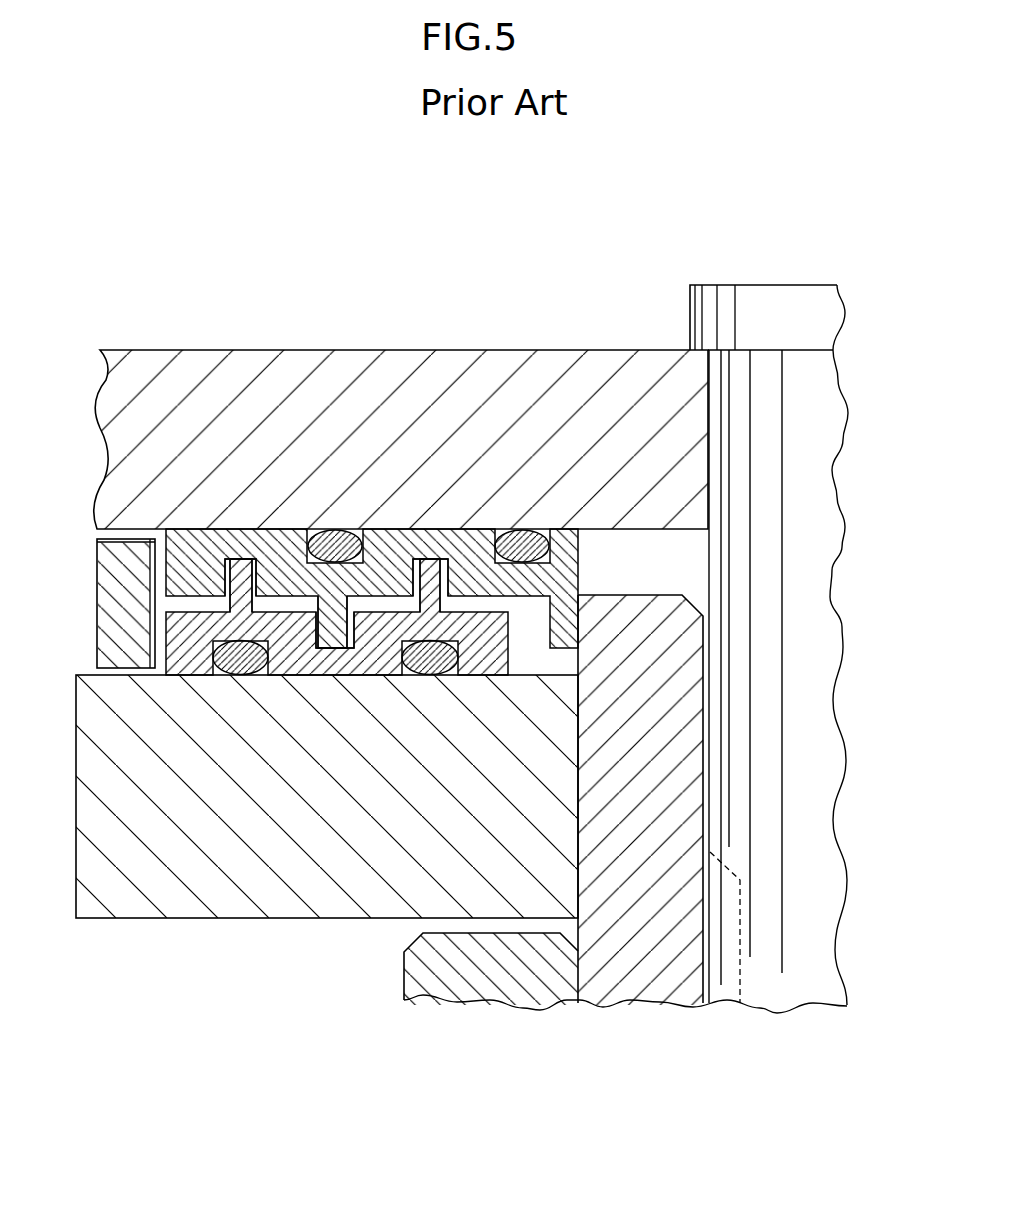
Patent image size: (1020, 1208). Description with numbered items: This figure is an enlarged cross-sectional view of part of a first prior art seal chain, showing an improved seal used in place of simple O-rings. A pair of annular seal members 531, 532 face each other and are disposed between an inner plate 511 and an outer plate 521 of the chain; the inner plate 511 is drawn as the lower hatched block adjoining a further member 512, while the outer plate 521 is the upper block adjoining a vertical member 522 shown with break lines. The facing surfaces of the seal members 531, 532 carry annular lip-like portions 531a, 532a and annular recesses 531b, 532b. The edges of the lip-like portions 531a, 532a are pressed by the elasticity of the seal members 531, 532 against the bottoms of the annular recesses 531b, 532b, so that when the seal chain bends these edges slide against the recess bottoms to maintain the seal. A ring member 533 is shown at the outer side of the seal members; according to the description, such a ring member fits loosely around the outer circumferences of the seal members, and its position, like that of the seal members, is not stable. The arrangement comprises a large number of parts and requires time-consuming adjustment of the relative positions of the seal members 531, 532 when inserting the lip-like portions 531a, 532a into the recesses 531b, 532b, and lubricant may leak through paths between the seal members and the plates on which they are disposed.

The inner plate 511 is at (122, 913).
The second housing member 512 is at (636, 1000).
The outer plate 521 is at (550, 350).
The shaft 522 is at (820, 306).
The annular seal member 531 is at (410, 591).
The annular lip-like portion 531a is at (440, 593).
The annular recess 531b is at (333, 648).
The annular seal member 532 is at (410, 639).
The annular lip-like portion 532a is at (333, 633).
The annular recess 532b is at (428, 567).
The spacer ring 533 is at (87, 591).